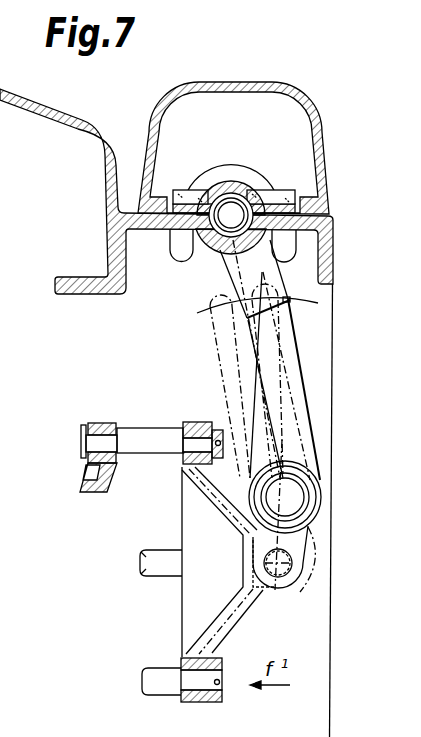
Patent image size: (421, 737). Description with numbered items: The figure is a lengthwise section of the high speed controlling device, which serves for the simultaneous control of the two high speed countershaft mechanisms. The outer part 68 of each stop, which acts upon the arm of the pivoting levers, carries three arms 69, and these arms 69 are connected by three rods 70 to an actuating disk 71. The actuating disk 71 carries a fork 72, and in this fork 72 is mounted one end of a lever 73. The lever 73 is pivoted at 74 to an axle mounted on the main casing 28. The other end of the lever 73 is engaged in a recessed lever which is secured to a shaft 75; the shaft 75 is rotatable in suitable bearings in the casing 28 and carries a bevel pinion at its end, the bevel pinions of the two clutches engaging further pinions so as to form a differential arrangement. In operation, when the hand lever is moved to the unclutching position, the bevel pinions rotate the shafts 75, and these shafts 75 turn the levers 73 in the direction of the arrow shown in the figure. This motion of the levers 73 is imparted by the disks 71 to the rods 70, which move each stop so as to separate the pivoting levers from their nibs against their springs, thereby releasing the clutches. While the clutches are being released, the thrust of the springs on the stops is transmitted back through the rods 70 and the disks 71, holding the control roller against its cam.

The main casing 28 is at (110, 184).
The shaft 75 is at (243, 204).
The pivot 74 is at (217, 269).
The lever 73 is at (295, 400).
The actuating disk 71 is at (223, 630).
The fork 72 is at (297, 587).
The rods 70 is at (128, 436).
The arms 69 is at (96, 424).
The outer part of stop 68 is at (80, 488).